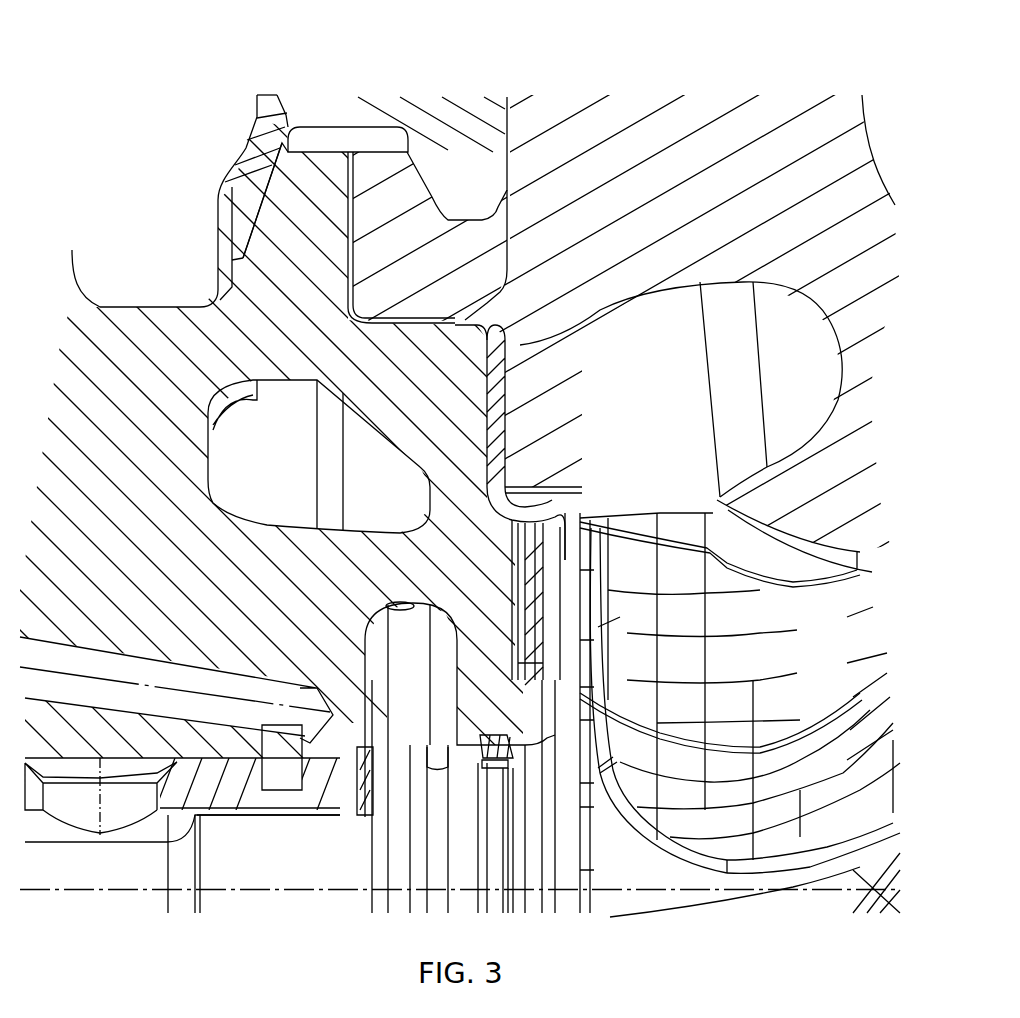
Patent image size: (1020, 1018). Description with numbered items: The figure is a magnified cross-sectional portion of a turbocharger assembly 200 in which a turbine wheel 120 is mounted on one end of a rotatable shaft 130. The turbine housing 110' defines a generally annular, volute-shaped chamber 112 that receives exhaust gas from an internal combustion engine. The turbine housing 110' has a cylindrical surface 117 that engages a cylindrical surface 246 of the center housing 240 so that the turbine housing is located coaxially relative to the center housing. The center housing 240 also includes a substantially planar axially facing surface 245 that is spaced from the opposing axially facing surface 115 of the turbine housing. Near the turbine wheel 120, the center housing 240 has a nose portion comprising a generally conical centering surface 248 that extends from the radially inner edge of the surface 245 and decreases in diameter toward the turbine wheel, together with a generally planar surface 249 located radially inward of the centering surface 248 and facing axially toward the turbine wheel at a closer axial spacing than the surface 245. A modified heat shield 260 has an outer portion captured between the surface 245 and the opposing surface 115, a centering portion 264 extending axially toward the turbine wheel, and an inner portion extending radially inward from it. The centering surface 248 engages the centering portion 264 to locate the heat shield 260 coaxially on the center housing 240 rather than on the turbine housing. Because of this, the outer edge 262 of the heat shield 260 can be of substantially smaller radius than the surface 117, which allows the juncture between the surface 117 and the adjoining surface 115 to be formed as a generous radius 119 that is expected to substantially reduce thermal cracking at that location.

The turbocharger assembly 200 is at (240, 82).
The cylindrical surface 246 is at (420, 328).
The cylindrical surface 117 is at (452, 338).
The radius 119 is at (503, 330).
The turbine housing 110' is at (707, 188).
The center housing 240 is at (165, 318).
The axially facing surface 245 is at (488, 360).
The axially facing surface 115 is at (498, 507).
The centering surface 248 is at (518, 507).
The chamber 112 is at (815, 380).
The centering portion 264 is at (532, 560).
The outer edge 262 is at (488, 420).
The planar surface 249 is at (515, 575).
The heat shield 260 is at (546, 623).
The shaft 130 is at (335, 880).
The turbine wheel 120 is at (740, 887).